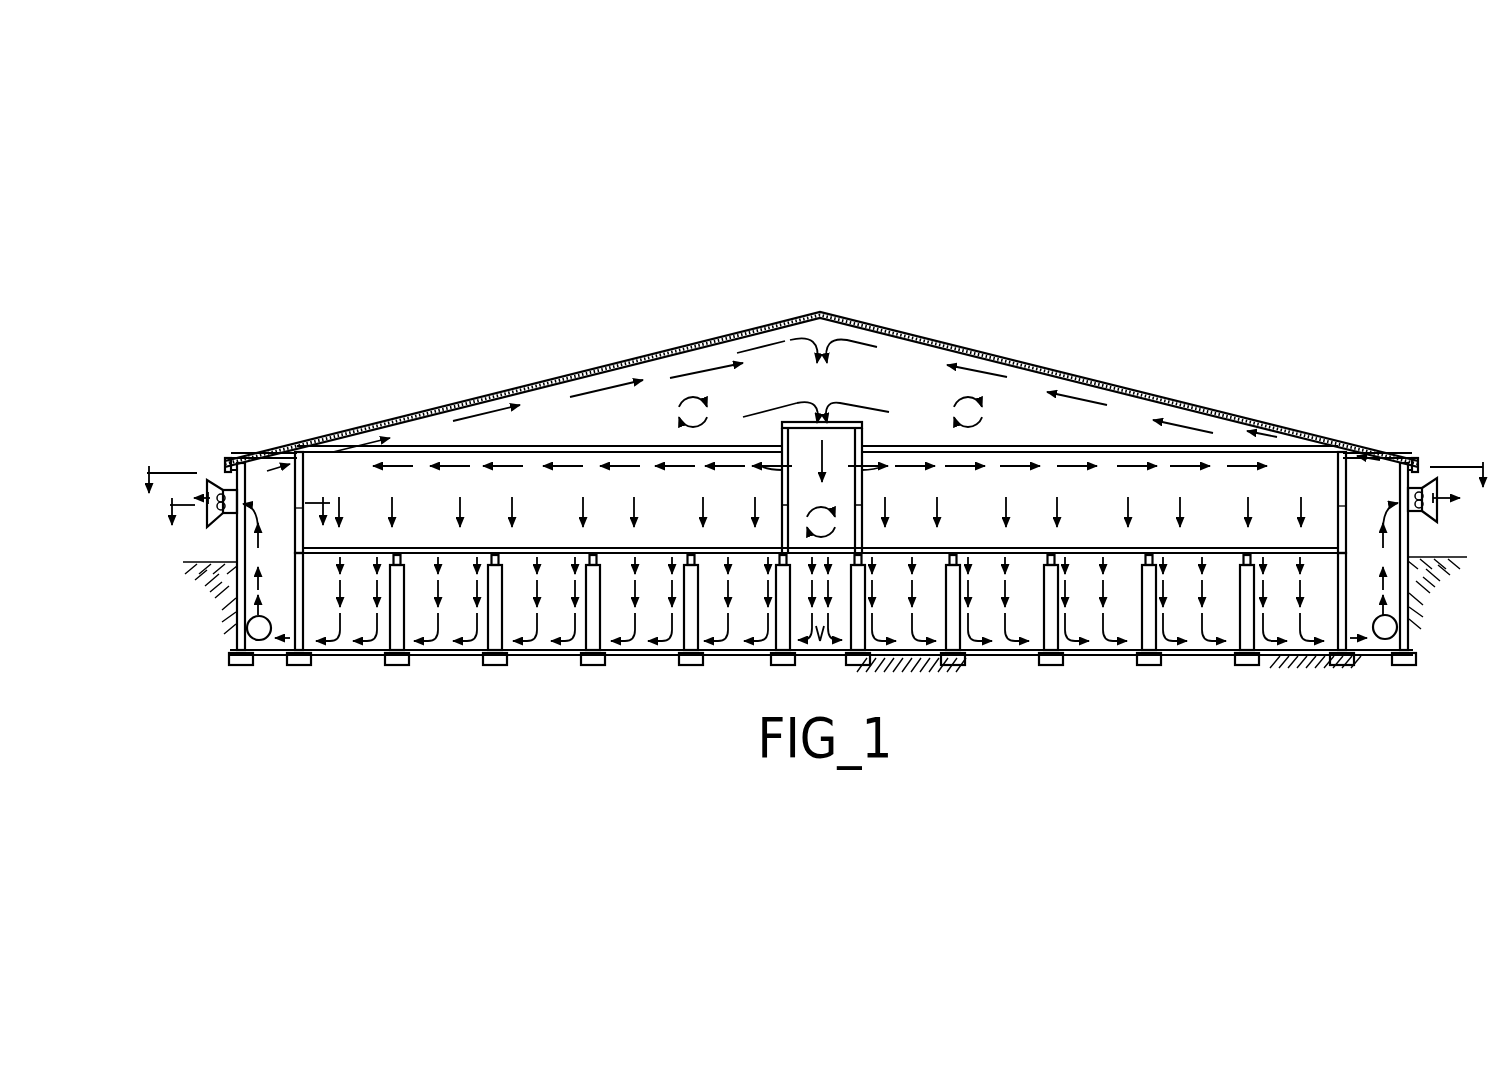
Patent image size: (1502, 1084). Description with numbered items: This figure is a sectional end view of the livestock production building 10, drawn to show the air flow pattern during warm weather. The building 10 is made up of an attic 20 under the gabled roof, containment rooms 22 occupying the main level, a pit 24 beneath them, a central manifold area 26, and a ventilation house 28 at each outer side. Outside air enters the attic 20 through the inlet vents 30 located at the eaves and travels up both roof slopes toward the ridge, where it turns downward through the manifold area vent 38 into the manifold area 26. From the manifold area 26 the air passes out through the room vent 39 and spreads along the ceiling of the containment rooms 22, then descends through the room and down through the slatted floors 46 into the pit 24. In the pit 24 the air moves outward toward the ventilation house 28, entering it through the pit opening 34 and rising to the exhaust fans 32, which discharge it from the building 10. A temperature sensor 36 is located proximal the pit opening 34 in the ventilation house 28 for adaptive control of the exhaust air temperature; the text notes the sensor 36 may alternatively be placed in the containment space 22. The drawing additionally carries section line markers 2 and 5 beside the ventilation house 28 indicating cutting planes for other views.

The livestock production building 10 is at (815, 490).
The attic 20 is at (917, 370).
The containment rooms 22 is at (412, 480).
The pit 24 is at (1103, 638).
The manifold area 26 is at (840, 450).
The ventilation house 28 is at (263, 487).
The inlet vents 30 is at (230, 470).
The exhaust fans 32 is at (208, 482).
The pit opening 34 is at (293, 630).
The temperature sensor 36 is at (259, 641).
The manifold area vent 38 is at (817, 423).
The room vent 39 is at (790, 467).
The slatted floors 46 is at (568, 550).
The section line 2- 2 is at (815, 494).
The section line 5- 5 is at (813, 525).